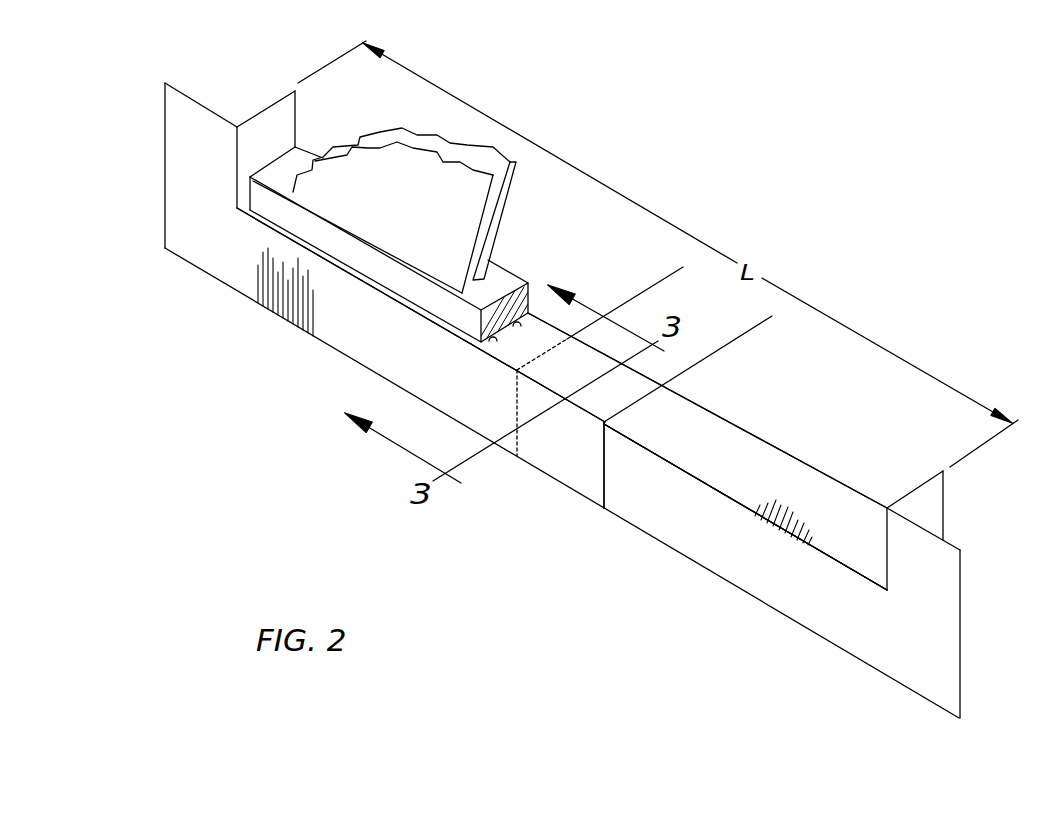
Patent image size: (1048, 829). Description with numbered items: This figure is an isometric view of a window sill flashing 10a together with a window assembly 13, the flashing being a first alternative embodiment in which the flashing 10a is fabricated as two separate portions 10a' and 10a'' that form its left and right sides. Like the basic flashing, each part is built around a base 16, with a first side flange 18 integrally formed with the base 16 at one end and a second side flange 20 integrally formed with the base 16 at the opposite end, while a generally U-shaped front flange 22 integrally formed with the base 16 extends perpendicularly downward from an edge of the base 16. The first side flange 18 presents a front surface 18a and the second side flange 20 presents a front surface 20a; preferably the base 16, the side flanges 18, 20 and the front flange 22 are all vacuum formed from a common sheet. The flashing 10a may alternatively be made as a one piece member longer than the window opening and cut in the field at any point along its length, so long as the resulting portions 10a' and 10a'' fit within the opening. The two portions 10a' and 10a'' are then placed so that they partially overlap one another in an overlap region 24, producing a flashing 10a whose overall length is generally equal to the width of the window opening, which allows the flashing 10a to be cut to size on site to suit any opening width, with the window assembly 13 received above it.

The flashing 10a is at (562, 463).
The portion of flashing 10a' is at (421, 313).
The portion of flashing 10a'' is at (745, 453).
The window assembly 13 is at (417, 118).
The base 16 is at (856, 544).
The first side flange 18 is at (271, 153).
The front surface of first side flange 18a is at (207, 172).
The second side flange 20 is at (924, 484).
The front surface of second side flange 20a is at (925, 589).
The front flange 22 is at (779, 576).
The overlap region 24 is at (763, 321).